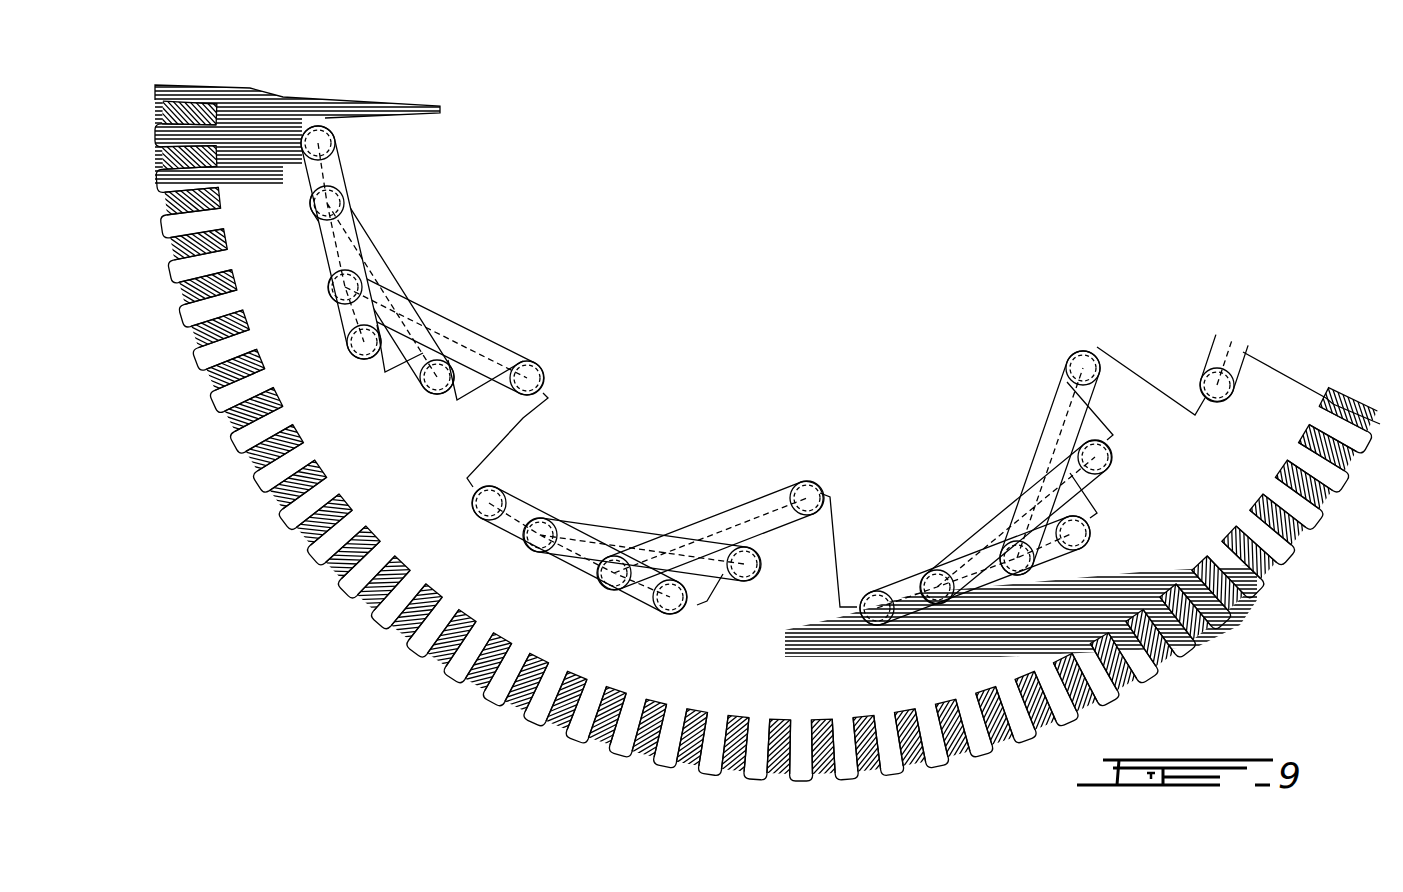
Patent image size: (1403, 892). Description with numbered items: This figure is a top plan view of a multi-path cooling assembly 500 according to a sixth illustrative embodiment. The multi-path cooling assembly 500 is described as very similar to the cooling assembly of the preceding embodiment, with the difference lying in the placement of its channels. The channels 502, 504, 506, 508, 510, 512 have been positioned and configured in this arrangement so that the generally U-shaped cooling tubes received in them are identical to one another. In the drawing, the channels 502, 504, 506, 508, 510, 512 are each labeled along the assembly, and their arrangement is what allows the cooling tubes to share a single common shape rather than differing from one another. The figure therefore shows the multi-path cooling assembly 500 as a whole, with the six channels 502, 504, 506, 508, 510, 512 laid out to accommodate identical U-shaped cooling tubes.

The multi-path cooling assembly 500 is at (768, 445).
The channel 502 is at (474, 503).
The channel 504 is at (528, 548).
The channel 506 is at (601, 586).
The channel 508 is at (673, 614).
The channel 510 is at (746, 582).
The channel 512 is at (828, 497).